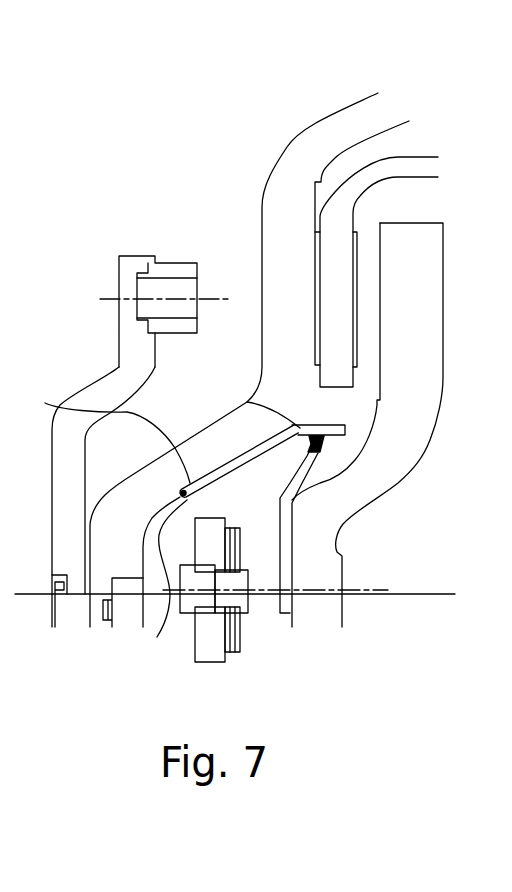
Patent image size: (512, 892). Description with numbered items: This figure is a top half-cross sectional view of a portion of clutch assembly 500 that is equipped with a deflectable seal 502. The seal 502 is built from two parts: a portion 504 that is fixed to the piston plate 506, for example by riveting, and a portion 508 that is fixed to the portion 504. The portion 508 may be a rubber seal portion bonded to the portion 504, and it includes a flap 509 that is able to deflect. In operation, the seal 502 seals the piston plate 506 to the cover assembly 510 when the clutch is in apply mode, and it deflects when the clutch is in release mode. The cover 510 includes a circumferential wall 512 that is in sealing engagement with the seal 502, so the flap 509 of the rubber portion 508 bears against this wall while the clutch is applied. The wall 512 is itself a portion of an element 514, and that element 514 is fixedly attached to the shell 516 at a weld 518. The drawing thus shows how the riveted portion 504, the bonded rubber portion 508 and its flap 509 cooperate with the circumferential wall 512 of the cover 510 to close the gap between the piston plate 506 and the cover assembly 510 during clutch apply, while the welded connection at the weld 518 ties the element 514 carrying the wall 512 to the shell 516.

The clutch assembly 500 is at (245, 208).
The deflectable seal 502 is at (339, 447).
The portion 504 is at (290, 557).
The piston plate 506 is at (430, 297).
The portion 508 is at (320, 452).
The flap 509 is at (240, 448).
The cover assembly 510 is at (183, 419).
The circumferential wall 512 is at (243, 397).
The element 514 is at (100, 431).
The shell 516 is at (132, 550).
The weld 518 is at (157, 637).